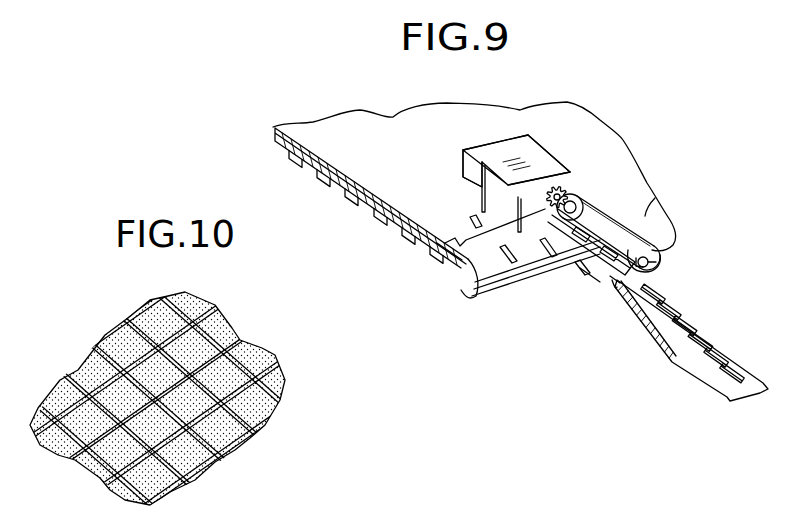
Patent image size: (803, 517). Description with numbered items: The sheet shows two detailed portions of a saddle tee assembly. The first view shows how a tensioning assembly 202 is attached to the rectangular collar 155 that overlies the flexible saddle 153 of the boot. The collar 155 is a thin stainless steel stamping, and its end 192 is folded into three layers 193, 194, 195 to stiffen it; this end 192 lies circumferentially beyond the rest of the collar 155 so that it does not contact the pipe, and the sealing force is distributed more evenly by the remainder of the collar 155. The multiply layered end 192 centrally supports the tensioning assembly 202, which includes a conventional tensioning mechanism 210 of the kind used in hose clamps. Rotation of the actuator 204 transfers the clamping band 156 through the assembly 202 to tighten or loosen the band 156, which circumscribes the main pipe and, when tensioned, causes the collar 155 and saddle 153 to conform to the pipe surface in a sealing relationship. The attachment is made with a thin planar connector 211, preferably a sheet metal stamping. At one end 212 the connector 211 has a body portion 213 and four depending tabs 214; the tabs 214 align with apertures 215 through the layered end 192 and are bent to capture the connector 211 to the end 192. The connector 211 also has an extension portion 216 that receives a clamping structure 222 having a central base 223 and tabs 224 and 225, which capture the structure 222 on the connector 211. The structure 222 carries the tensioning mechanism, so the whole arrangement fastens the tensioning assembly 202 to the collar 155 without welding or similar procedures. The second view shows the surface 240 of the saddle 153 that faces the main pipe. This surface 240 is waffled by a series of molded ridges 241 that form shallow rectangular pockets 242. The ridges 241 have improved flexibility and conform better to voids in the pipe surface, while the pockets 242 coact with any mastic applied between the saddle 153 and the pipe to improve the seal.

In FIG. 9, the saddle 153 is at (350, 191).
In FIG. 9, the collar 155 is at (588, 110).
In FIG. 9, the clamping band 156 is at (697, 303).
In FIG. 9, the end 192 is at (657, 198).
In FIG. 9, the layer 193 is at (494, 300).
In FIG. 9, the layer 194 is at (441, 261).
In FIG. 9, the layer 195 is at (451, 279).
In FIG. 9, the tensioning assembly 202 is at (608, 205).
In FIG. 9, the actuator 204 is at (566, 190).
In FIG. 9, the tensioning mechanism 210 is at (547, 128).
In FIG. 9, the connector 211 is at (520, 147).
In FIG. 9, the end 212 is at (468, 149).
In FIG. 9, the body portion 213 is at (542, 158).
In FIG. 9, the tabs 214 is at (479, 198).
In FIG. 9, the apertures 215 is at (472, 221).
In FIG. 9, the extension portion 216 is at (433, 252).
In FIG. 9, the clamping structure 222 is at (642, 223).
In FIG. 9, the central base 223 is at (615, 288).
In FIG. 9, the tab 224 is at (588, 268).
In FIG. 9, the tab 225 is at (660, 262).
In FIG. 10, the surface 240 is at (223, 344).
In FIG. 10, the ridges 241 is at (283, 392).
In FIG. 10, the pockets 242 is at (123, 325).